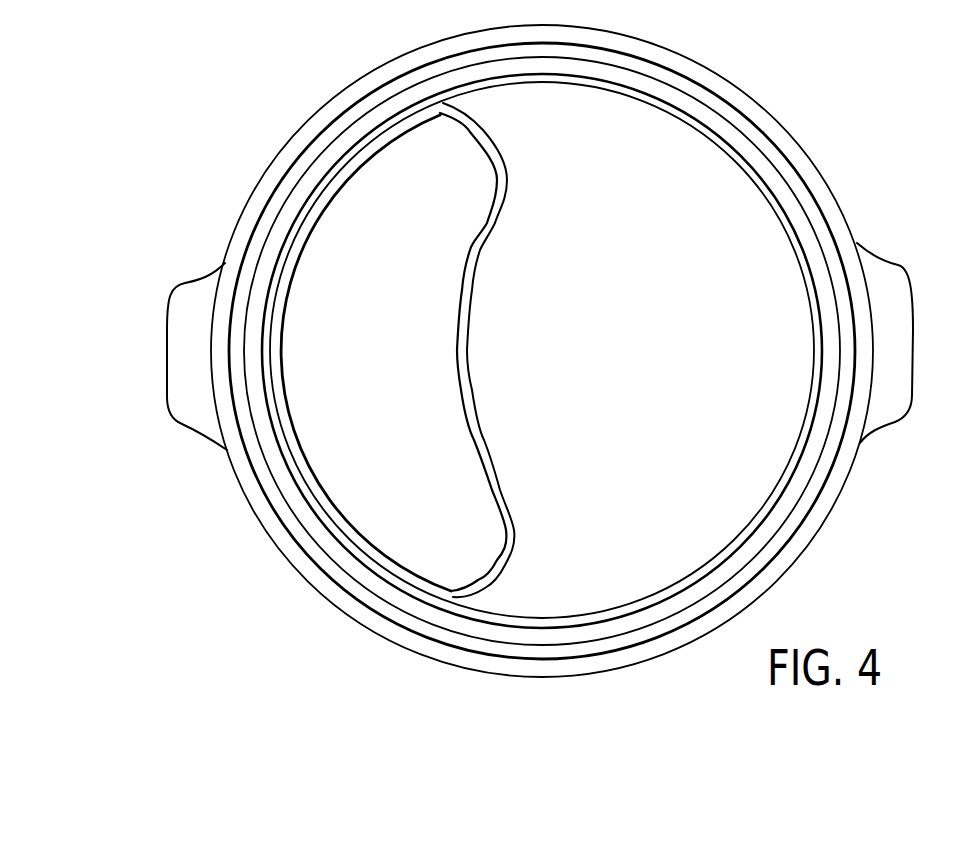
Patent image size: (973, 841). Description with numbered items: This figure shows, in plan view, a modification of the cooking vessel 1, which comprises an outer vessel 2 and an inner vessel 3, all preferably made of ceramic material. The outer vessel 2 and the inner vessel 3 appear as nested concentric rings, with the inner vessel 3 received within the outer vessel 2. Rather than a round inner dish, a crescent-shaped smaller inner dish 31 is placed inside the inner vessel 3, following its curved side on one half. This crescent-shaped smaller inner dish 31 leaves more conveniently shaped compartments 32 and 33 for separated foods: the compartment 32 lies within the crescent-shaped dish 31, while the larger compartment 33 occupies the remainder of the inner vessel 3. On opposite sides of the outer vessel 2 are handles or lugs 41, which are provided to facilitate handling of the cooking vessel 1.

The cooking vessel 1 is at (553, 367).
The outer vessel 2 is at (745, 96).
The inner vessel 3 is at (775, 184).
The crescent-shaped smaller inner dish 31 is at (507, 565).
The compartment 32 is at (372, 530).
The compartment 33 is at (775, 459).
The handles or lugs 41 is at (885, 268).